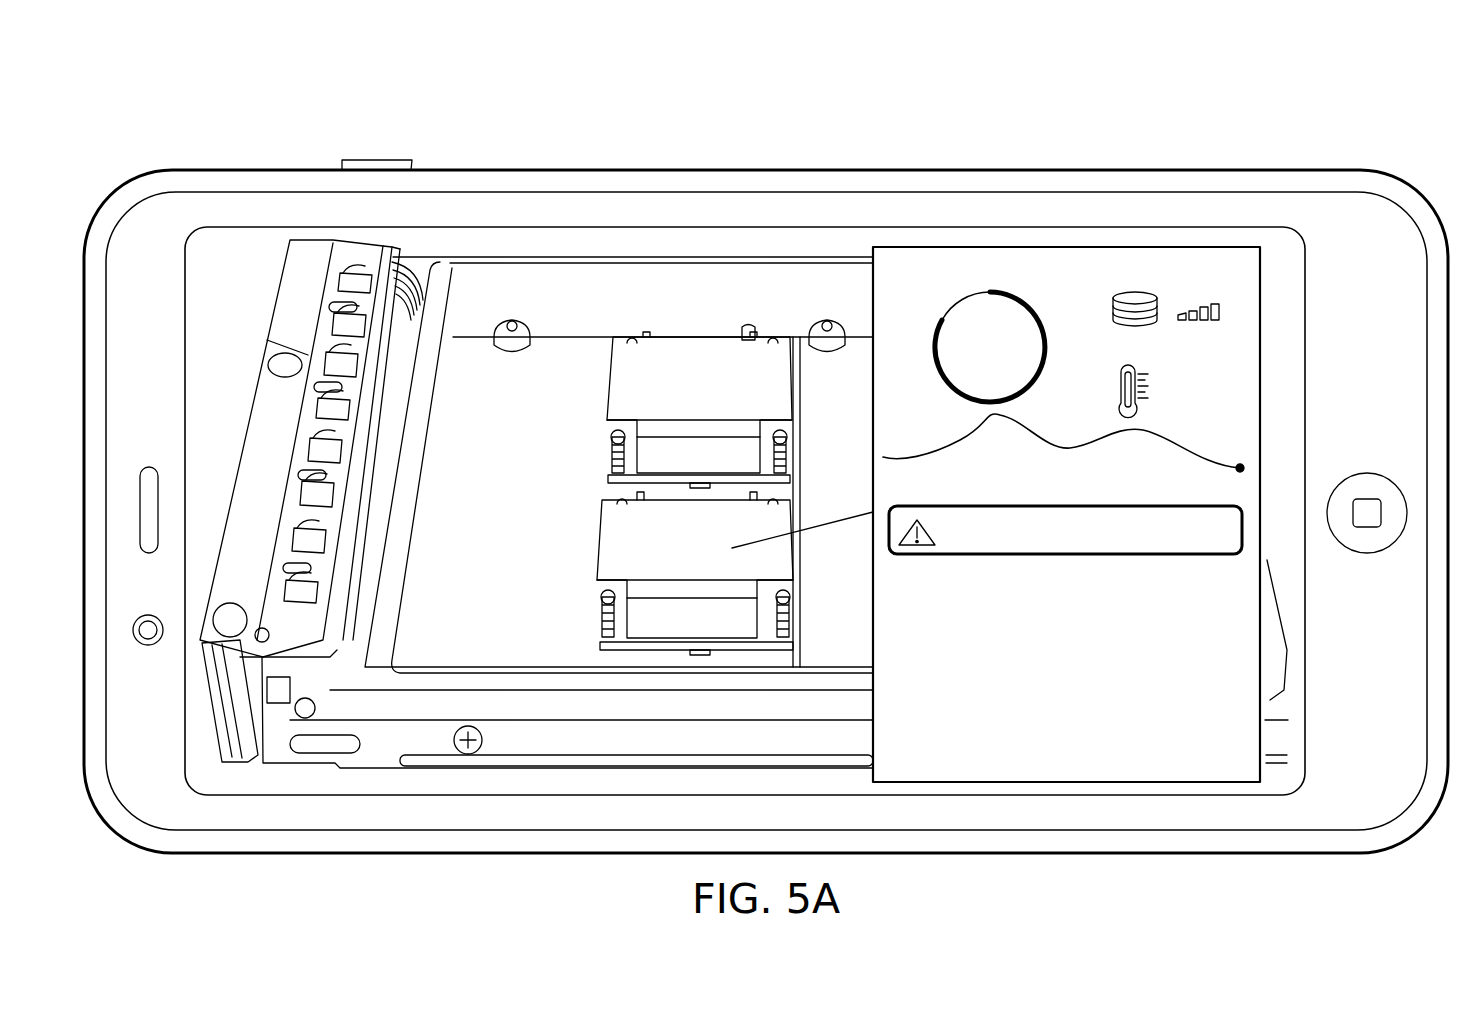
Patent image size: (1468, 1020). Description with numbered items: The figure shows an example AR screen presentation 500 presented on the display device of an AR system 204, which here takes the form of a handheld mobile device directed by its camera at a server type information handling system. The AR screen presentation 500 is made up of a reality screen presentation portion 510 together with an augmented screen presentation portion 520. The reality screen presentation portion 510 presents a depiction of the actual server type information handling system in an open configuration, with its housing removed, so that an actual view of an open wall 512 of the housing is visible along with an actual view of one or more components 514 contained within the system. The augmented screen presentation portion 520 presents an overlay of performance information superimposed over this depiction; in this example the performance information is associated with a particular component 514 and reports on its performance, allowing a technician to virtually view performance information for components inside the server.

The AR screen presentation 500 is at (1204, 99).
The AR system 204 is at (1095, 172).
The reality screen presentation portion 510 is at (676, 227).
The open wall 512 is at (777, 256).
The component 514 is at (610, 398).
The augmented screen presentation portion 520 is at (1262, 380).